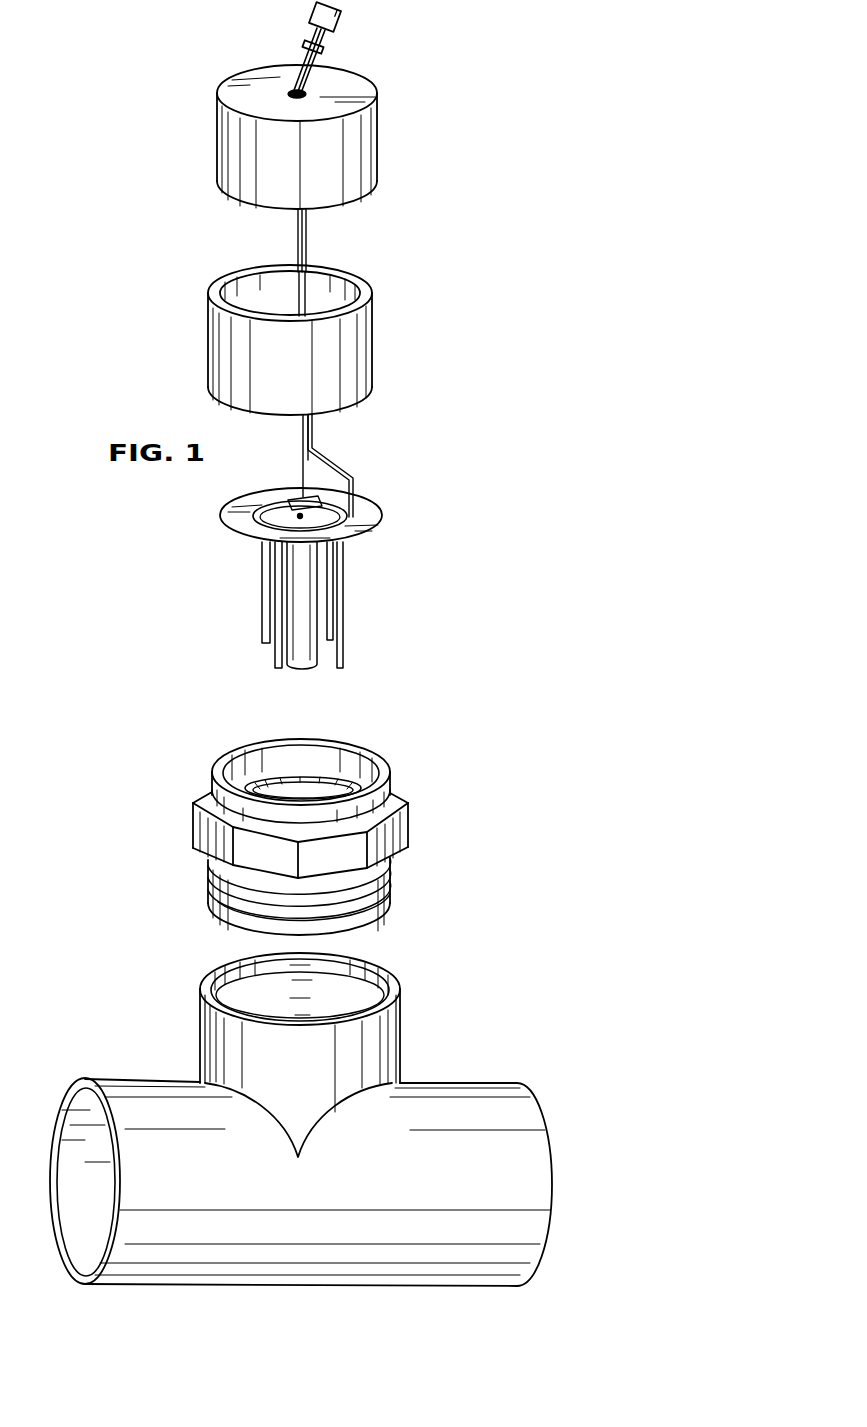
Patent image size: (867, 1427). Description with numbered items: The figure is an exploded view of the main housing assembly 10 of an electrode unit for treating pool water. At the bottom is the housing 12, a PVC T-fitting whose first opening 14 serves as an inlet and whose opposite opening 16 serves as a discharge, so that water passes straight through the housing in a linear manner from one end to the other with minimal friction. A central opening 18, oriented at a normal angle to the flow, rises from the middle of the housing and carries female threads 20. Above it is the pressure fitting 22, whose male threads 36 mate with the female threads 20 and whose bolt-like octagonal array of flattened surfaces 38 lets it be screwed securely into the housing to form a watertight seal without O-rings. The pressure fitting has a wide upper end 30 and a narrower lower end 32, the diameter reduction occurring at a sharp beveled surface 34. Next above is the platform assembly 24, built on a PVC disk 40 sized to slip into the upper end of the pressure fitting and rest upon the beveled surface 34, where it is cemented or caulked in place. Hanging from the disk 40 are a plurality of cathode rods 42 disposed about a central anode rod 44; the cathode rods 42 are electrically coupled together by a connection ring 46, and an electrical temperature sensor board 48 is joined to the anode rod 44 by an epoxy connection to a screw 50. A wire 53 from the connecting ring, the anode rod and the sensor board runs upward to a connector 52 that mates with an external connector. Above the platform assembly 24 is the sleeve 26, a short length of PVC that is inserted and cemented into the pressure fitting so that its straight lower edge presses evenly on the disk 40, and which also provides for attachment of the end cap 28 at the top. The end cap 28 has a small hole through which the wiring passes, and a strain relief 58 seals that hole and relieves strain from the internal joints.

The main housing assembly 10 is at (145, 755).
The housing 12 is at (148, 1075).
The first opening 14 is at (72, 1130).
The opening 16 is at (540, 1100).
The central opening 18 is at (352, 985).
The female threads 20 is at (300, 982).
The pressure fitting 22 is at (187, 860).
The platform assembly 24 is at (185, 553).
The sleeve 26 is at (377, 343).
The end cap 28 is at (378, 127).
The upper end 30 is at (338, 760).
The lower end 32 is at (375, 926).
The beveled surface 34 is at (272, 783).
The male threads 36 is at (390, 884).
The octagonal array of flattened surfaces 38 is at (405, 816).
The disk 40 is at (360, 509).
The cathode rods 42 is at (262, 600).
The anode rod 44 is at (312, 668).
The connection ring 46 is at (350, 530).
The temperature sensor board 48 is at (293, 498).
The screw 50 is at (298, 516).
The connector 52 is at (343, 23).
The wire 53 is at (302, 460).
The strain relief 58 is at (328, 47).